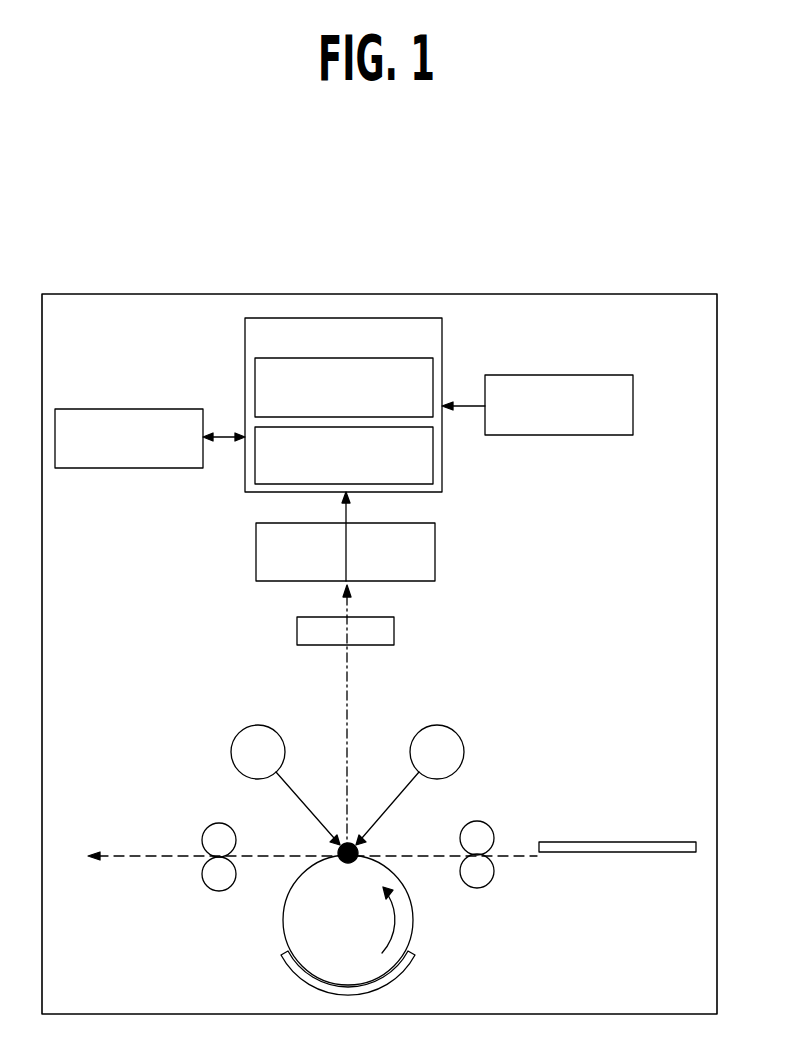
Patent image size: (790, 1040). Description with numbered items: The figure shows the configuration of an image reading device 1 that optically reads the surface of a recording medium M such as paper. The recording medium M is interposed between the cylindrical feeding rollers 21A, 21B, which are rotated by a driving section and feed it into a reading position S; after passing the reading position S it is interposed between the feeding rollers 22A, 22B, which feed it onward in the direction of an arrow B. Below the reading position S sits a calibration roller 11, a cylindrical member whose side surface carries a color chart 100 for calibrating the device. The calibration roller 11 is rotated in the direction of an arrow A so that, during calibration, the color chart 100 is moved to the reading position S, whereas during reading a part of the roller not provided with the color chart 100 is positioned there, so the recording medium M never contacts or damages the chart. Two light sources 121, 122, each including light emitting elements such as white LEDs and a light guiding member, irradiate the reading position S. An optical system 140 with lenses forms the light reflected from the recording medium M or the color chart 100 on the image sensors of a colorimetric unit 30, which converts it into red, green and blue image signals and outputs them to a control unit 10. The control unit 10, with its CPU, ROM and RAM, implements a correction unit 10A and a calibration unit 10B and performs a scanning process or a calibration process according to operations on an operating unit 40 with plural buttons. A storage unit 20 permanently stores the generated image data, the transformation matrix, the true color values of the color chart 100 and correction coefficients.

The image reading device 1 is at (717, 598).
The control unit 10 is at (245, 382).
The correction unit 10A is at (436, 369).
The calibration unit 10B is at (436, 442).
The storage unit 20 is at (90, 408).
The colorimetric unit 30 is at (435, 553).
The operating unit 40 is at (580, 375).
The optical system 140 is at (394, 633).
The light source 121 is at (255, 725).
The light source 122 is at (443, 725).
The calibration roller 11 is at (414, 920).
The color chart 100 is at (400, 970).
The feeding roller 21A is at (483, 821).
The feeding roller 21B is at (487, 887).
The feeding roller 22A is at (213, 823).
The feeding roller 22B is at (213, 891).
The reading position S is at (348, 863).
The recording medium M is at (640, 842).
The arrow A is at (384, 920).
The arrow B is at (303, 859).